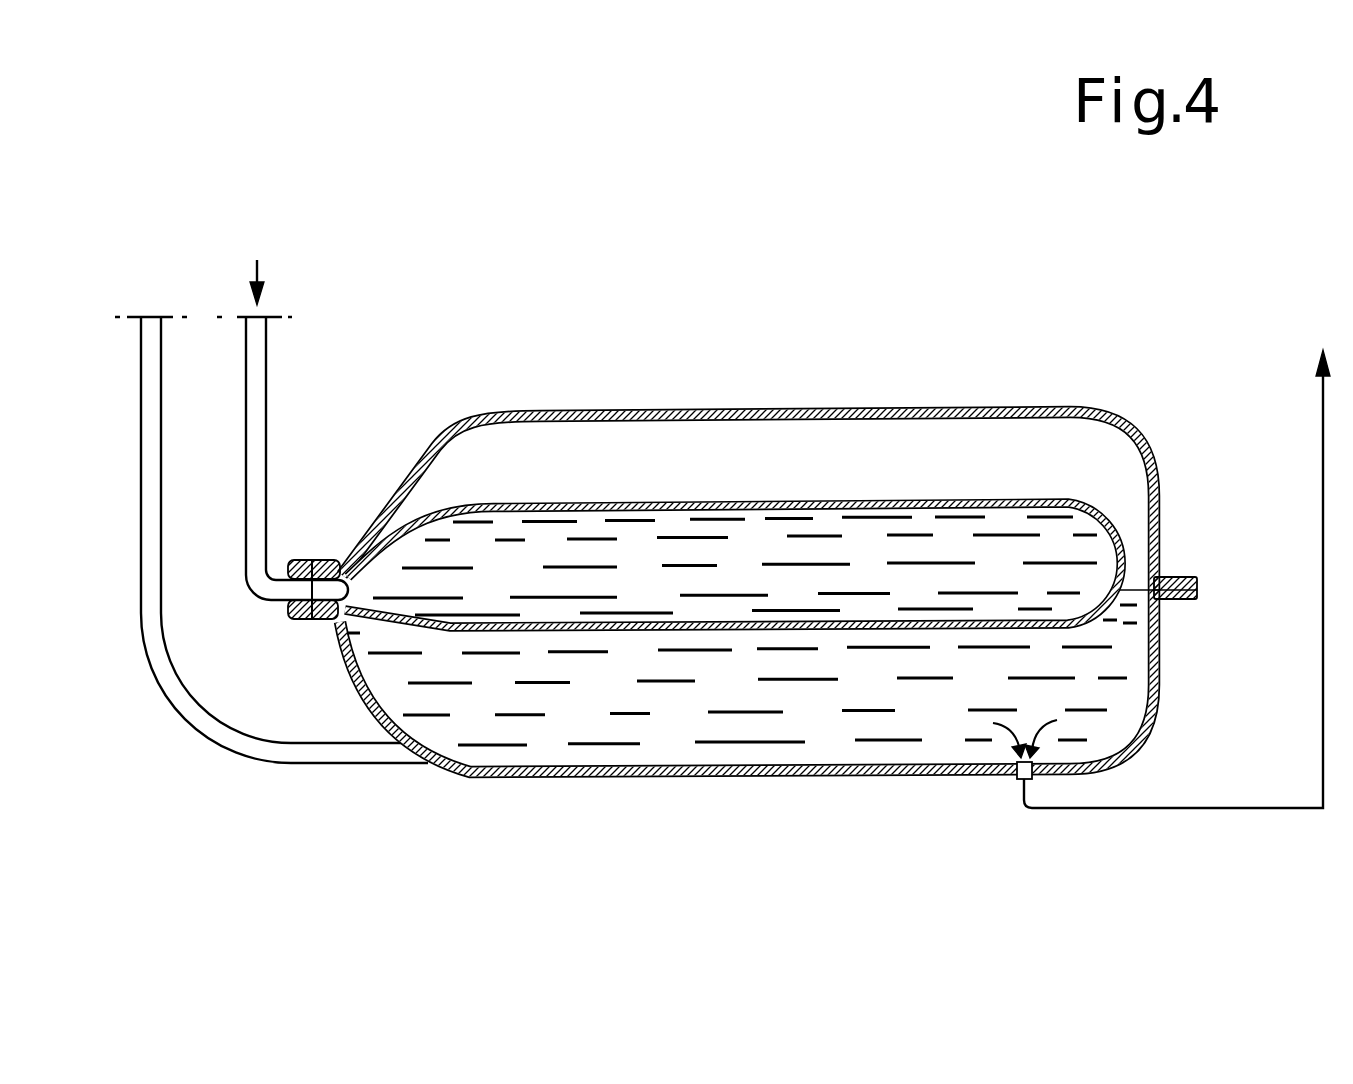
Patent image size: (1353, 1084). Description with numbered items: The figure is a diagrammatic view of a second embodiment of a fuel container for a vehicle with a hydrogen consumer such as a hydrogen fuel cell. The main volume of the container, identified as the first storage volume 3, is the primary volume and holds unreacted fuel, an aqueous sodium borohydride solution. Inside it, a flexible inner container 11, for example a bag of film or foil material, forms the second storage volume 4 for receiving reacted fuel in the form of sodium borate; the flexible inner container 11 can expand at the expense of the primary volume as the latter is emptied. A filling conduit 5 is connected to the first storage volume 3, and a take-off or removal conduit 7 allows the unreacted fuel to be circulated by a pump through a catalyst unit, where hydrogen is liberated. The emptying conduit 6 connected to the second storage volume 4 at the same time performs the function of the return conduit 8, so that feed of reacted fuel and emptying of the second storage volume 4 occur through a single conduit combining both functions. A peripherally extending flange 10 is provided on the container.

The first storage volume 3 is at (627, 445).
The second storage volume 4 is at (688, 555).
The filling conduit 5 is at (165, 690).
The emptying conduit 6 is at (310, 430).
The return conduit 8 is at (262, 367).
The take-off or removal conduit 7 is at (1165, 808).
The peripherally extending flange 10 is at (1193, 596).
The flexible inner container 11 is at (908, 497).